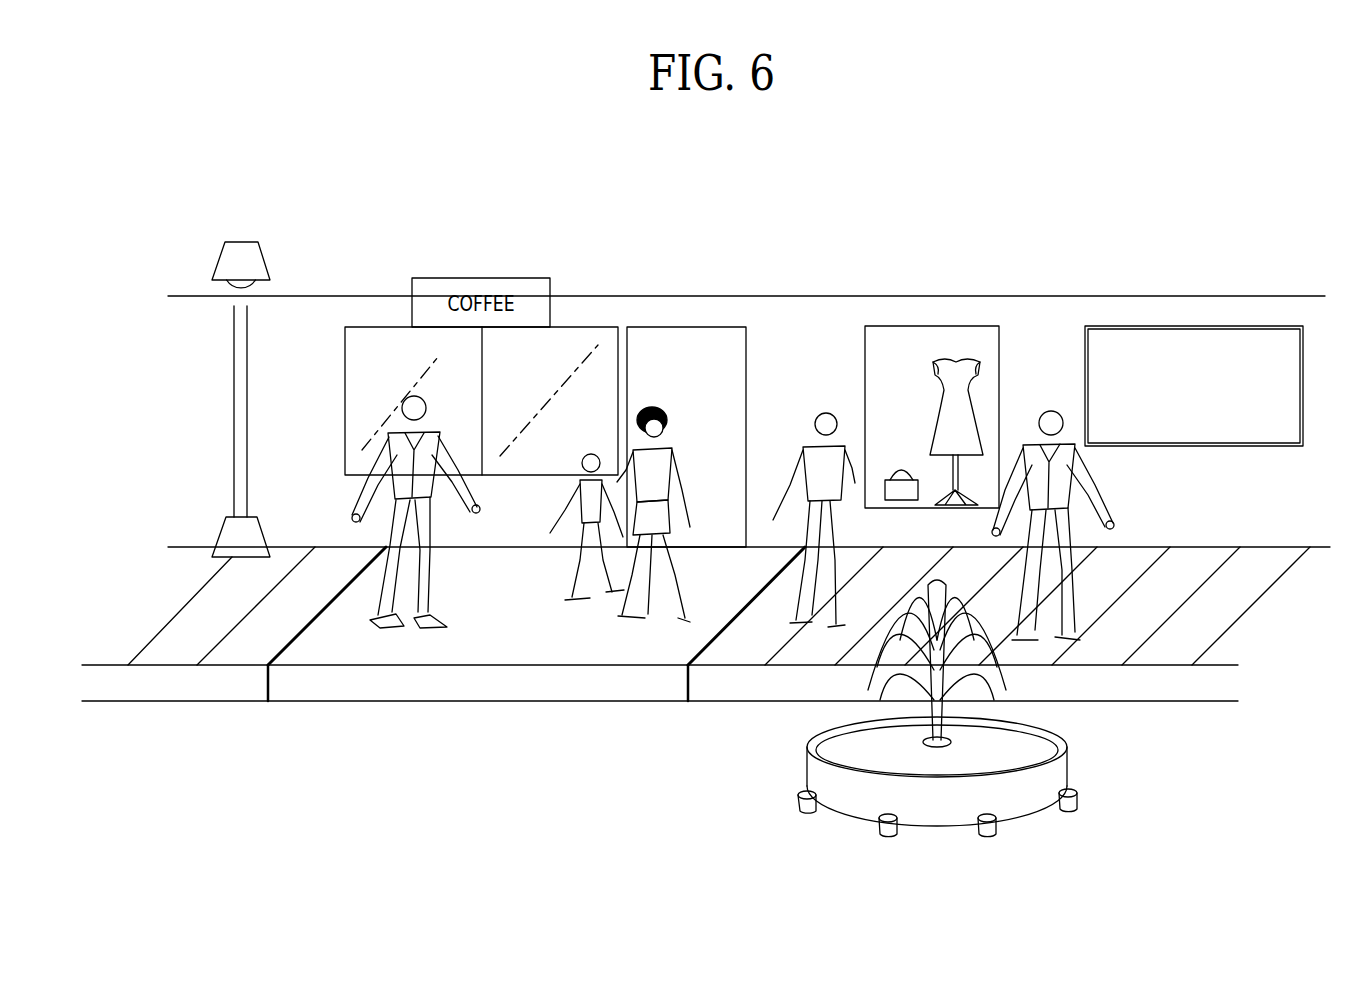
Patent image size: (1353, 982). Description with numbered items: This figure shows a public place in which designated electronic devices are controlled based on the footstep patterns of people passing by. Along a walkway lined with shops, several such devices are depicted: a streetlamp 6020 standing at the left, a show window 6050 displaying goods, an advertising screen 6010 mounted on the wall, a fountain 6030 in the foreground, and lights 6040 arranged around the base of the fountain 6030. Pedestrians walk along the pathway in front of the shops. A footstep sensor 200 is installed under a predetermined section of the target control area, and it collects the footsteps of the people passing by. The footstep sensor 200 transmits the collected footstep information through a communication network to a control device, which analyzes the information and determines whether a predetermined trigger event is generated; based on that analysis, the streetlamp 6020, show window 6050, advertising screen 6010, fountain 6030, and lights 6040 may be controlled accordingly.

The footstep sensor 200 is at (478, 688).
The advertising screen 6010 is at (1215, 326).
The streetlamp 6020 is at (241, 249).
The fountain 6030 is at (1065, 770).
The lights 6040 is at (803, 803).
The show window 6050 is at (936, 326).